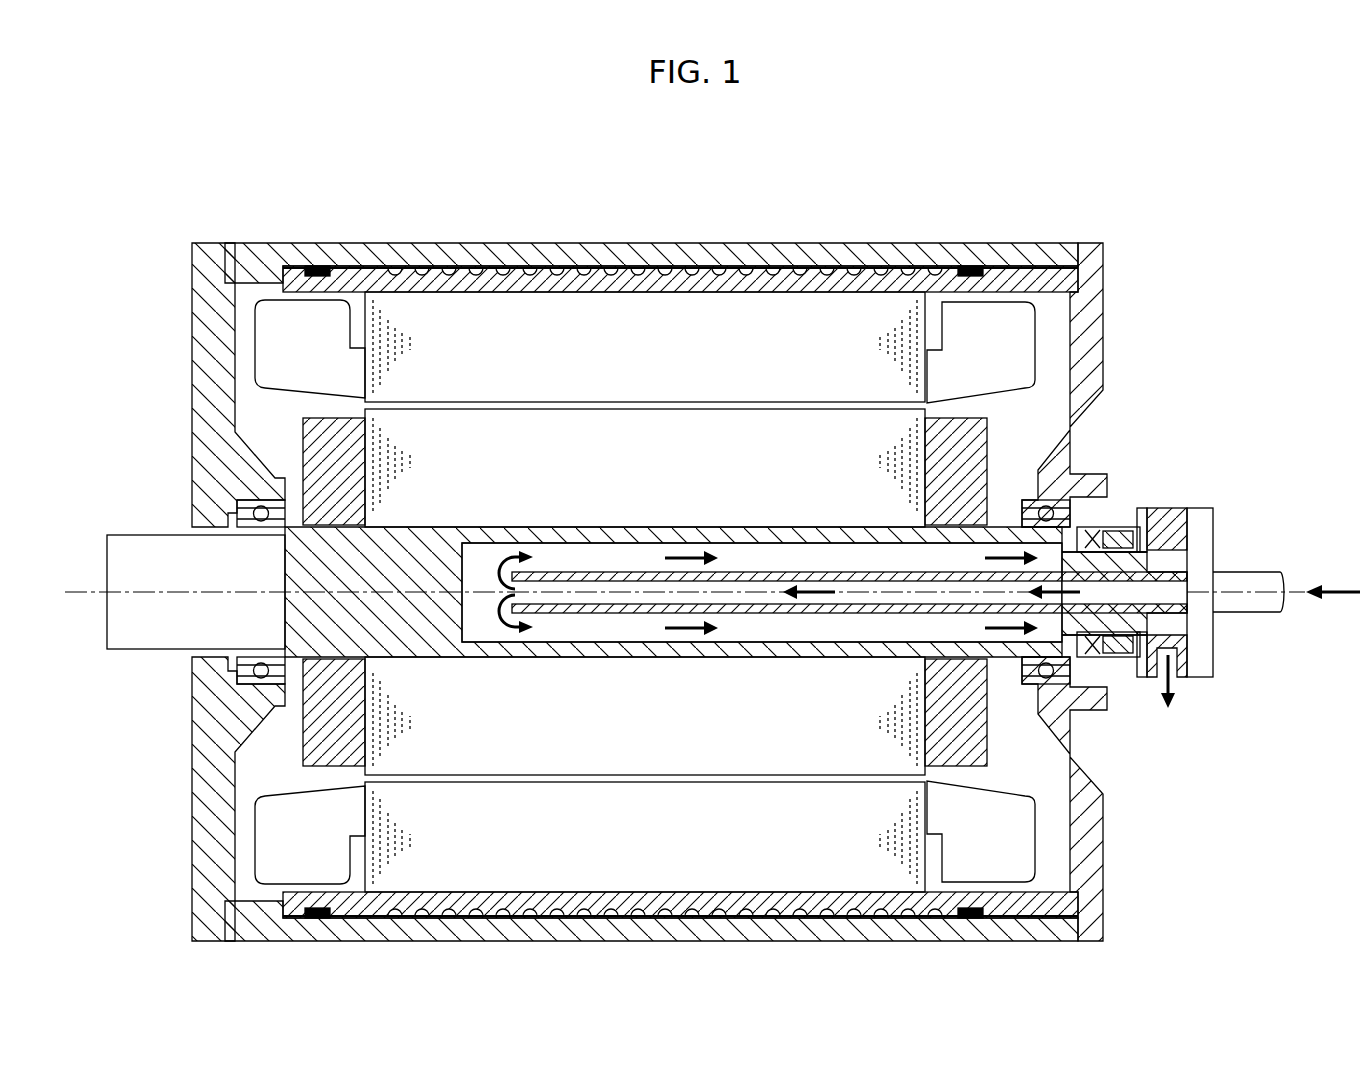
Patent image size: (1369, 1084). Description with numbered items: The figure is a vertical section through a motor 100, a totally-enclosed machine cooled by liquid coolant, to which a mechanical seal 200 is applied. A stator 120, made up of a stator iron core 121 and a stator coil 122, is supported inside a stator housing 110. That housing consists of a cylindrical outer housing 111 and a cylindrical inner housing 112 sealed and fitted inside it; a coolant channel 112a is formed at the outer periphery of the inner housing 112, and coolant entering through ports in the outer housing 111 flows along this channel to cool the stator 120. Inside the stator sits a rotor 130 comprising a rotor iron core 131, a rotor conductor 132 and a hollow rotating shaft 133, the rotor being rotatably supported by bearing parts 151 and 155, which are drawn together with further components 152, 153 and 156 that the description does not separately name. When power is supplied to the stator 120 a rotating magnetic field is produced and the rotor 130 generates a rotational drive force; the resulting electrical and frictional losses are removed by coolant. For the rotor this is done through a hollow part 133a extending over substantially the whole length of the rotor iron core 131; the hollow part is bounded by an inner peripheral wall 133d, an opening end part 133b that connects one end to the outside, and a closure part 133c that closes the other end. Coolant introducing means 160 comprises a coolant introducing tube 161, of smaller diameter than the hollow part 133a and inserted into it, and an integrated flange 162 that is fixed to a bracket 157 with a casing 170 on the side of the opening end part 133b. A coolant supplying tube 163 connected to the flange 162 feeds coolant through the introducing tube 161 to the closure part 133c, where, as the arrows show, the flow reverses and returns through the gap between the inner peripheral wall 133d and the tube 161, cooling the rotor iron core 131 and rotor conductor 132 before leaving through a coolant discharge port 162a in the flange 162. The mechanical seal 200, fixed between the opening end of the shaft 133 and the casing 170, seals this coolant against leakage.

The motor 100 is at (1102, 196).
The stator housing 110 is at (585, 165).
The outer housing 111 is at (474, 258).
The inner housing 112 is at (541, 270).
The coolant channel 112a is at (652, 272).
The stator 120 is at (985, 162).
The stator iron core 121 is at (834, 312).
The stator coil 122 is at (960, 322).
The rotor 130 is at (104, 375).
The rotor iron core 131 is at (386, 498).
The rotor conductor 132 is at (333, 432).
The hollow rotating shaft 133 is at (136, 557).
The hollow part 133a is at (626, 622).
The opening end part 133b is at (1022, 640).
The closure part 133c is at (474, 612).
The inner peripheral wall 133d is at (812, 626).
The bearing part 151 is at (104, 692).
The first bearing 152 is at (257, 678).
The first bracket 153 is at (213, 760).
The bearing part 155 is at (1192, 725).
The second bearing 156 is at (1094, 702).
The bracket 157 is at (1086, 812).
The coolant introducing means 160 is at (1212, 392).
The coolant introducing tube 161 is at (1206, 530).
The flange 162 is at (1166, 525).
The coolant discharge port 162a is at (1170, 653).
The coolant supplying tube 163 is at (1266, 552).
The casing 170 is at (1142, 525).
The mechanical seal 200 is at (1108, 512).